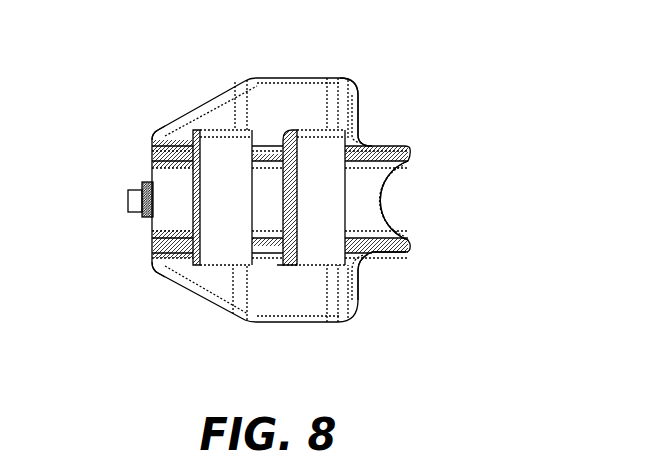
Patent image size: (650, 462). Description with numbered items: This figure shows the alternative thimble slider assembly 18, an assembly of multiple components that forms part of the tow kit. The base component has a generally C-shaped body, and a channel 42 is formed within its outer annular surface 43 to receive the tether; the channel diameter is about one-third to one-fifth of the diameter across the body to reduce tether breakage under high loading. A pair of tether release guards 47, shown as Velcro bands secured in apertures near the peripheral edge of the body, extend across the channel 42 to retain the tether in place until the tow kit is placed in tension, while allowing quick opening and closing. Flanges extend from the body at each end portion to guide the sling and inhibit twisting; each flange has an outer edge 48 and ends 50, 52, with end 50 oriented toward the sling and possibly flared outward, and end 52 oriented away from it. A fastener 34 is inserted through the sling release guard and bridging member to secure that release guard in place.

The thimble slider assembly 18 is at (122, 40).
The fastener 34 is at (128, 199).
The channel 42 is at (377, 201).
The outer annular surface 43 is at (410, 243).
The tether release guard 47 is at (239, 203).
The outer edge 48 is at (227, 92).
The end 50 is at (360, 103).
The end 52 is at (157, 131).